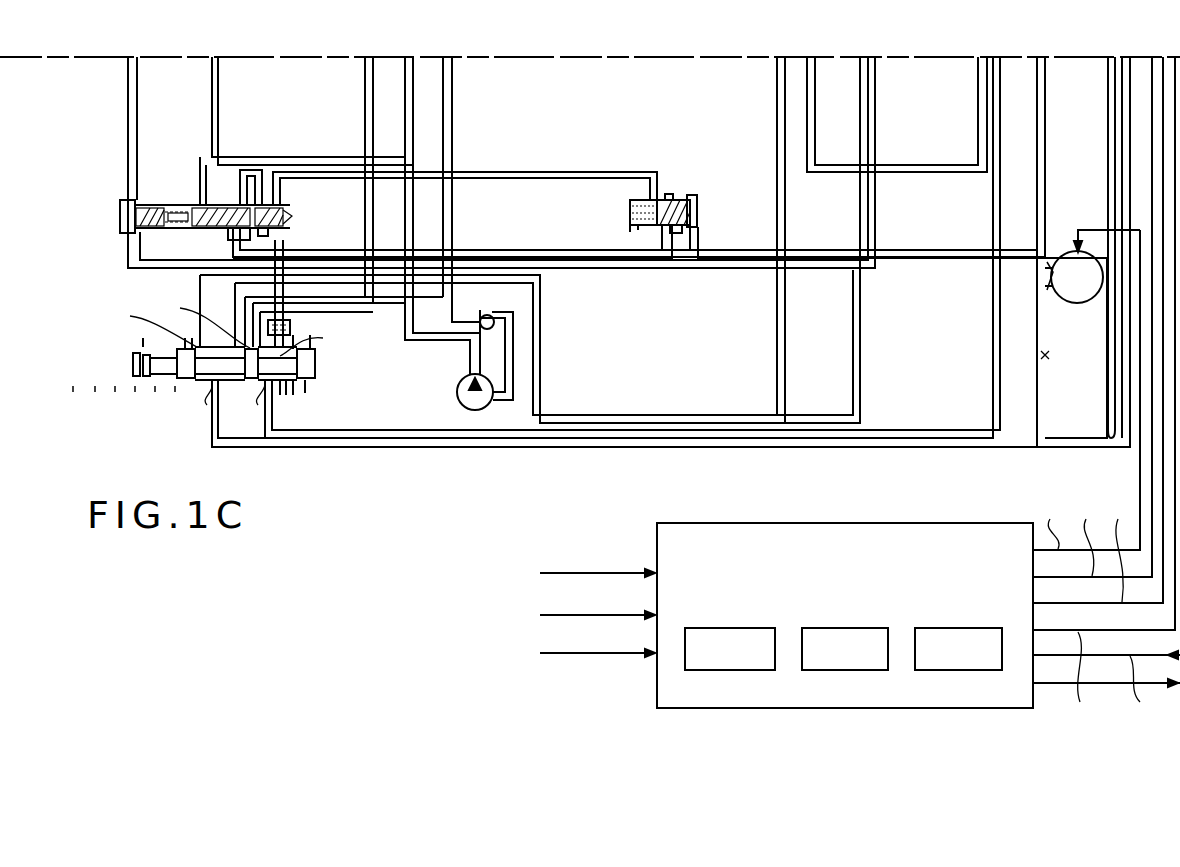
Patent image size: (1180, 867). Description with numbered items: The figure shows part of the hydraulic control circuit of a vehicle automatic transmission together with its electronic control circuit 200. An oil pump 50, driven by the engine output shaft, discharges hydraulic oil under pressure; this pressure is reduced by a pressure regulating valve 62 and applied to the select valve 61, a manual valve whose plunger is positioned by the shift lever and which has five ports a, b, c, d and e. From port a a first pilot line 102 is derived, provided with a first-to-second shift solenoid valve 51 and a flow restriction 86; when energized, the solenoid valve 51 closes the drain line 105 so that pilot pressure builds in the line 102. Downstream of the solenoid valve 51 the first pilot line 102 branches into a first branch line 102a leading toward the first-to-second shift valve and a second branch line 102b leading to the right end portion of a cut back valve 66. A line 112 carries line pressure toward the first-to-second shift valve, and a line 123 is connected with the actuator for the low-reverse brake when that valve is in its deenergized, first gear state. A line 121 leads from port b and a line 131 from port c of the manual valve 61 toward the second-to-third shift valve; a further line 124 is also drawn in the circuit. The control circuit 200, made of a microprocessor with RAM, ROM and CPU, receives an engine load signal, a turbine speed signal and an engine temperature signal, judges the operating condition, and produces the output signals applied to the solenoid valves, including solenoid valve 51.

The pressure regulating valve 62 is at (292, 216).
The oil passage 124 is at (588, 172).
The cut back valve 66 is at (698, 222).
The line 123 is at (945, 176).
The first branch line 102a is at (1040, 182).
The second branch line 102b is at (935, 250).
The 1-2 shift solenoid valve 51 is at (1075, 246).
The drain line 105 is at (1056, 294).
The flow restriction 86 is at (1047, 352).
The first pilot line 102 is at (1047, 392).
The line 131 is at (640, 271).
The line 112 is at (778, 323).
The line 121 is at (612, 422).
The select valve 61 is at (317, 366).
The oil pump 50 is at (458, 396).
The electronic control circuit 200 is at (742, 522).